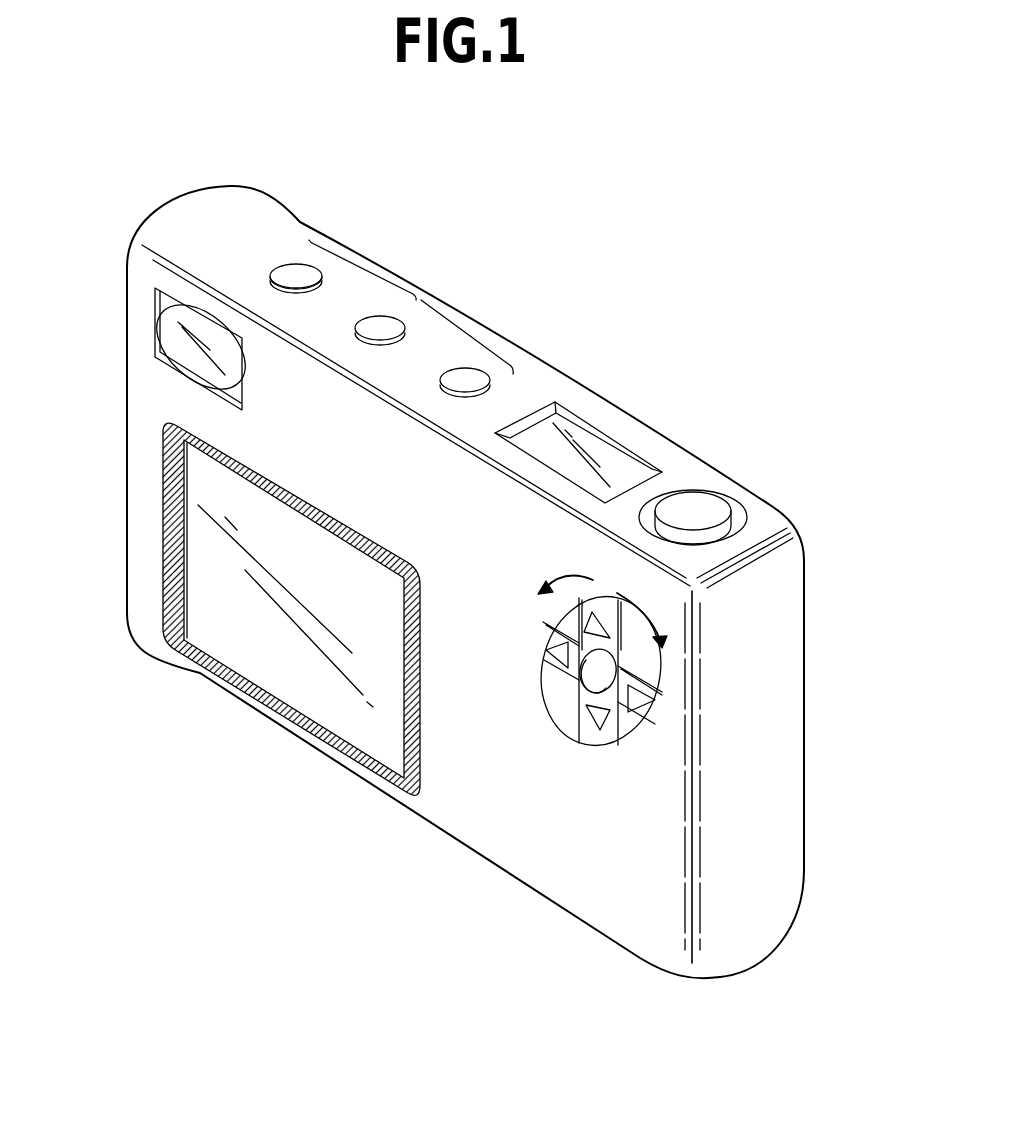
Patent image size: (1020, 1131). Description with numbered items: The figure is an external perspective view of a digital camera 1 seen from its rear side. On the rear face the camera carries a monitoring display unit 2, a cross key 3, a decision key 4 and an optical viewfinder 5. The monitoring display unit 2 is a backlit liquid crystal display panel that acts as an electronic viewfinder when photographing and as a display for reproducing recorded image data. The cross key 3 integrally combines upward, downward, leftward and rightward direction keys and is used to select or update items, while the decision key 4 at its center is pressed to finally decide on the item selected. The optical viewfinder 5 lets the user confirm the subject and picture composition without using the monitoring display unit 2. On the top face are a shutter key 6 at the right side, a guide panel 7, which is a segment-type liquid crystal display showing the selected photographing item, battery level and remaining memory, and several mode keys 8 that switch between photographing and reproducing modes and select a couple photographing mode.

The digital camera 1 is at (618, 300).
The monitoring display unit 2 is at (258, 632).
The cross key 3 is at (580, 683).
The decision key 4 is at (595, 676).
The optical viewfinder 5 is at (182, 347).
The shutter key 6 is at (695, 513).
The guide panel 7 is at (613, 460).
The mode keys 8 is at (425, 293).